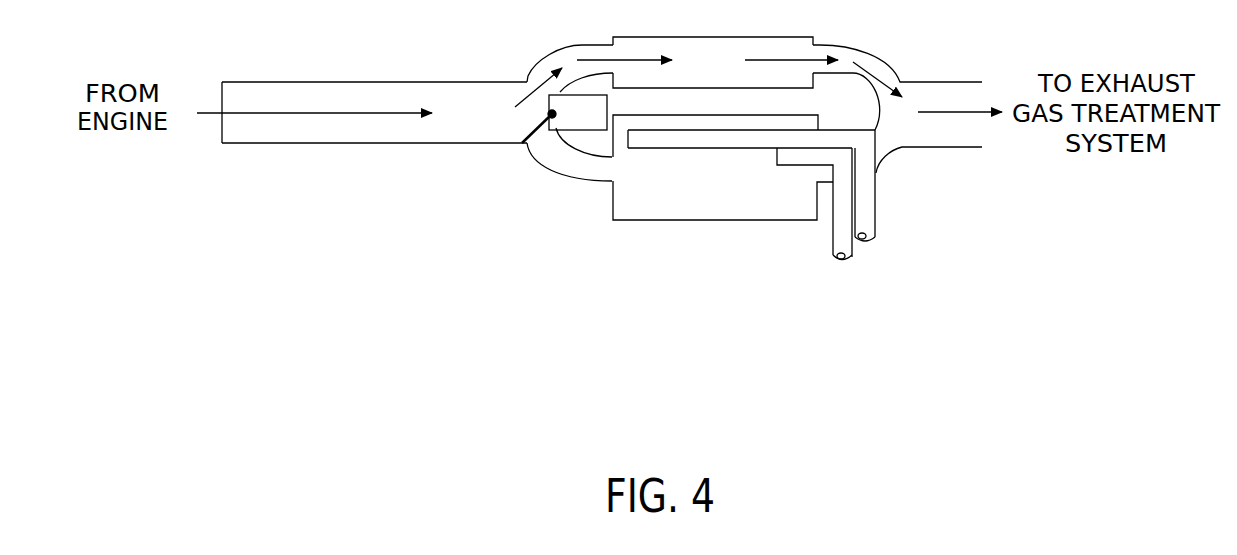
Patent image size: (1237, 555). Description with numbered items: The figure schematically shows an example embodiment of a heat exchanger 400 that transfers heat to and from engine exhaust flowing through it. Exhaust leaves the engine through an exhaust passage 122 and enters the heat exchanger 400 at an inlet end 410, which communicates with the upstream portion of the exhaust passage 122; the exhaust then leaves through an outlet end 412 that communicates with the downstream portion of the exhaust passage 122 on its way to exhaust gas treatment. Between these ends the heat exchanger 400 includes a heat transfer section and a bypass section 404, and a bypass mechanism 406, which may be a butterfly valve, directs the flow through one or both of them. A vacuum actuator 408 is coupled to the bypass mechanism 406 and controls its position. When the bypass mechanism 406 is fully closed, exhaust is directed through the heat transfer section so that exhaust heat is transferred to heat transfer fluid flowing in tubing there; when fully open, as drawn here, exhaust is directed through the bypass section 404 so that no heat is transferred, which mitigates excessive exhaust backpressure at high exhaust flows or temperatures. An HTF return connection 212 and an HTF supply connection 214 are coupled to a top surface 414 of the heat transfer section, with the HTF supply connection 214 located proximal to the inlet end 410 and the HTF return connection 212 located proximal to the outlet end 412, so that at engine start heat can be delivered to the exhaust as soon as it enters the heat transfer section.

The heat exchanger 400 is at (702, 285).
The exhaust passage 122 is at (485, 126).
The inlet end 410 is at (517, 63).
The bypass section 404 is at (730, 74).
The outlet end 412 is at (915, 168).
The top surface 414 is at (705, 211).
The HTF supply connection 214 is at (688, 148).
The HTF return connection 212 is at (796, 165).
The vacuum actuator 408 is at (597, 126).
The bypass mechanism 406 is at (551, 116).